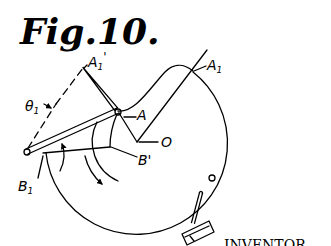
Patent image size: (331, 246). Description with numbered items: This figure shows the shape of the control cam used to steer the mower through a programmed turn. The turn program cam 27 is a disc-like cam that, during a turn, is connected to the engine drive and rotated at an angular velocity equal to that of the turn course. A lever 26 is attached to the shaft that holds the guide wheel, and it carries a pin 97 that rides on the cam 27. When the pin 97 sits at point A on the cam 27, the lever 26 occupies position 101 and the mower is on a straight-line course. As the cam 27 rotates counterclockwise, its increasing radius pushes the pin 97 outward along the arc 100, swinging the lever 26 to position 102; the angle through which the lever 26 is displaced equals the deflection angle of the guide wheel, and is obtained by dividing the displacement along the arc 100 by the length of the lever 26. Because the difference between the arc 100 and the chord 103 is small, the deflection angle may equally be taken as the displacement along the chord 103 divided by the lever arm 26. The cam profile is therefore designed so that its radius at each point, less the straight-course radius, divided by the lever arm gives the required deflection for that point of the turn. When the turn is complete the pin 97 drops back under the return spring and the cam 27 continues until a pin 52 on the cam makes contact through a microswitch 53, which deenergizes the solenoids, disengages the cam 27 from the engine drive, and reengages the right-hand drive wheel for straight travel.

The lever 26 is at (82, 121).
The turn program cam 27 is at (226, 121).
The pin 52 is at (216, 178).
The microswitch 53 is at (211, 226).
The pin 97 is at (123, 108).
The arc 100 is at (106, 85).
The lever position 101 is at (118, 182).
The lever position 102 is at (62, 92).
The chord 103 is at (62, 93).